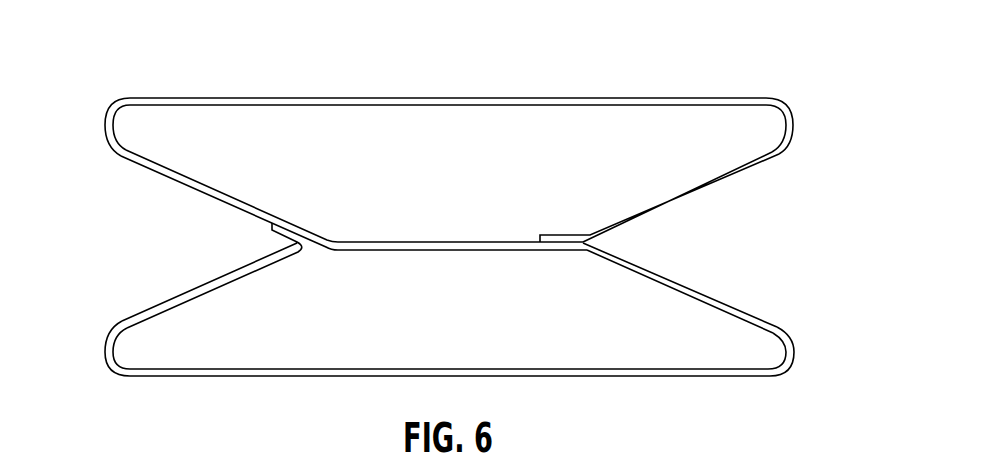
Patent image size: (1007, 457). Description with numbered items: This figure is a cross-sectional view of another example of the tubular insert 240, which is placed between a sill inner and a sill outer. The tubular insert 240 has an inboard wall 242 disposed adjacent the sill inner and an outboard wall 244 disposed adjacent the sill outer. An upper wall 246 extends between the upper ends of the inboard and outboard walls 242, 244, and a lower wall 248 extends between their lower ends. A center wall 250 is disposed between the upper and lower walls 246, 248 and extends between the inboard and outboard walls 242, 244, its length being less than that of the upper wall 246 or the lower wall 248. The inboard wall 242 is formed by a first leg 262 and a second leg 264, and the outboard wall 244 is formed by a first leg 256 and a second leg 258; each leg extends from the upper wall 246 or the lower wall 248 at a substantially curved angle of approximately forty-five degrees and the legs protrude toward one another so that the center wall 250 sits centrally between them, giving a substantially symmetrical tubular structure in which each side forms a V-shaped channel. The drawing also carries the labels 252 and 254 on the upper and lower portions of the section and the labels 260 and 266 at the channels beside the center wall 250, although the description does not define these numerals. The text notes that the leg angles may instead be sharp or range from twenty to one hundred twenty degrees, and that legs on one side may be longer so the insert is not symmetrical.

The tubular insert 240 is at (745, 70).
The inboard wall 242 is at (118, 157).
The outboard wall 244 is at (785, 150).
The upper wall 246 is at (472, 97).
The lower wall 248 is at (523, 380).
The center wall 250 is at (363, 250).
The upper clip portion 252 is at (455, 198).
The lower clip portion 254 is at (455, 328).
The first leg 256 is at (747, 170).
The second leg 258 is at (760, 310).
The right arm of lower clip portion 260 is at (722, 255).
The first leg 262 is at (155, 173).
The second leg 264 is at (140, 317).
The left arm of lower clip portion 266 is at (229, 255).